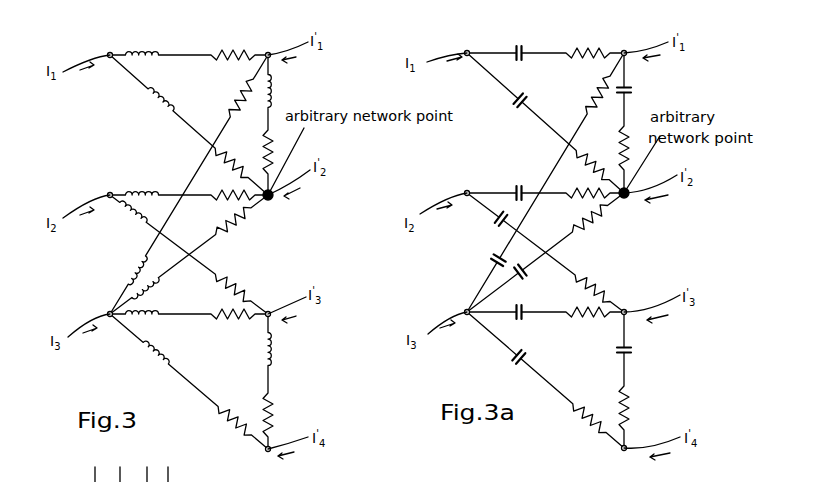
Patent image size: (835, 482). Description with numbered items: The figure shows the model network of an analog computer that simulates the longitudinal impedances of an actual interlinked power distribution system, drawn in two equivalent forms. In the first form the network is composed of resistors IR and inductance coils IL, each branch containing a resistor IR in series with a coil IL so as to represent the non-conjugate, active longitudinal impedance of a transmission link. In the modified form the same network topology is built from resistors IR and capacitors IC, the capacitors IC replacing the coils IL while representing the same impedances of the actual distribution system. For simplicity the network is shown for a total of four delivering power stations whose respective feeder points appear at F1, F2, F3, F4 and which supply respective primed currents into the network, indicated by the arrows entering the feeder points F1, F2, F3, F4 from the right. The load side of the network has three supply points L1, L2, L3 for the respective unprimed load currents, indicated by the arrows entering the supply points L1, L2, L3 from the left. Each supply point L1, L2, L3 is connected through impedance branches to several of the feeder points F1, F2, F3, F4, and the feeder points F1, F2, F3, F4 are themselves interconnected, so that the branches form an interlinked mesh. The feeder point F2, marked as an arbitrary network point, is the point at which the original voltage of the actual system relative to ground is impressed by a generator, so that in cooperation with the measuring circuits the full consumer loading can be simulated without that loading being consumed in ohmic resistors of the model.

In FIG. 3, the supply point L1 is at (109, 53).
In FIG. 3A, the supply point L1 is at (467, 51).
In FIG. 3, the supply point L2 is at (109, 193).
In FIG. 3A, the supply point L2 is at (460, 182).
In FIG. 3, the supply point L3 is at (109, 312).
In FIG. 3A, the supply point L3 is at (466, 310).
In FIG. 3, the feeder point F1 is at (258, 47).
In FIG. 3A, the feeder point F1 is at (624, 51).
In FIG. 3, the feeder point F2 is at (266, 205).
In FIG. 3A, the feeder point F2 is at (620, 204).
In FIG. 3, the feeder point F3 is at (268, 312).
In FIG. 3A, the feeder point F3 is at (630, 301).
In FIG. 3, the feeder point F4 is at (266, 451).
In FIG. 3A, the feeder point F4 is at (627, 447).
In FIG. 3, the resistor IR is at (229, 47).
In FIG. 3A, the resistor IR is at (580, 58).
In FIG. 3, the inductance coil IL is at (171, 104).
In FIG. 3A, the capacitor IC is at (519, 42).